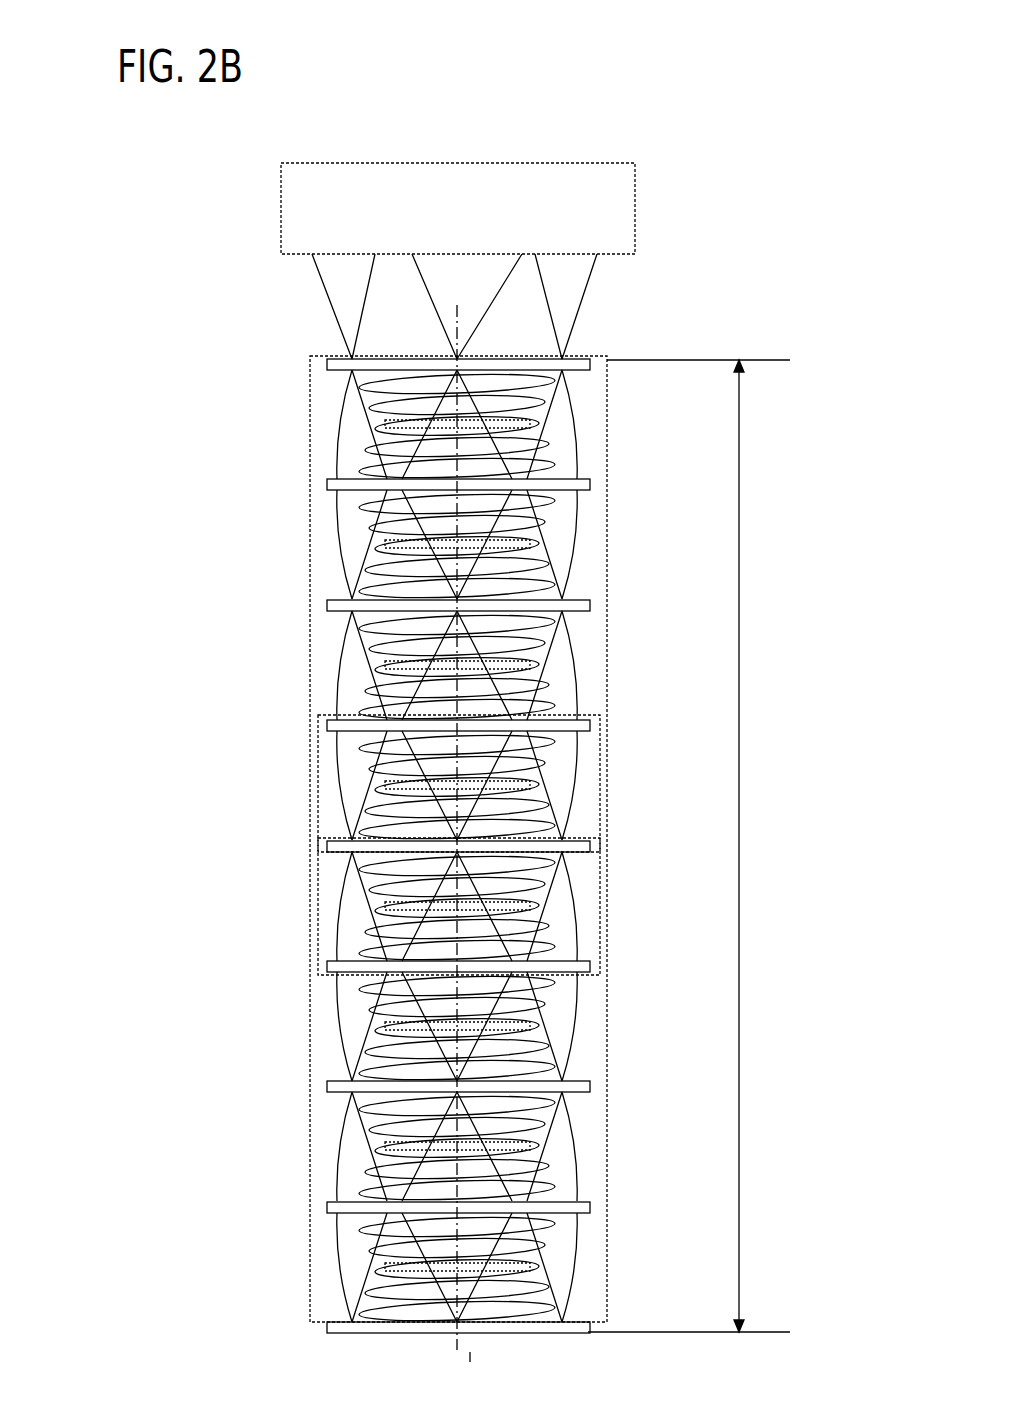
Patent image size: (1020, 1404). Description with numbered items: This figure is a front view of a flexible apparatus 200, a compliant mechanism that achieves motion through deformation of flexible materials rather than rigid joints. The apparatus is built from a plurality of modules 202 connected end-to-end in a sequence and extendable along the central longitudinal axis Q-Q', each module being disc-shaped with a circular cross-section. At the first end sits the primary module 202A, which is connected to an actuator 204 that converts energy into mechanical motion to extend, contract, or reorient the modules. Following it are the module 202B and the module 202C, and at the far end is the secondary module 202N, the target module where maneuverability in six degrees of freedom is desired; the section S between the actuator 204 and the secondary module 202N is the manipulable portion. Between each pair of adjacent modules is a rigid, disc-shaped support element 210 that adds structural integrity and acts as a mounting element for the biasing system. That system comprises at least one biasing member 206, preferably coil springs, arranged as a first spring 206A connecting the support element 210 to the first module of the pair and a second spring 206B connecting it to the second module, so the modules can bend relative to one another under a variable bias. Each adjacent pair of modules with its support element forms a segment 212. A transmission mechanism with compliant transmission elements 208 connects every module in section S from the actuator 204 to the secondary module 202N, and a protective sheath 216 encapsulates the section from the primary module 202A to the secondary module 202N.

The flexible apparatus 200 is at (708, 74).
The actuator 204 is at (480, 222).
The biasing member 206 is at (320, 837).
The first spring 206A is at (372, 397).
The second spring 206B is at (372, 459).
The sheath 216 is at (308, 600).
The transmission elements 208 is at (580, 685).
The support element 210 is at (385, 903).
The segment 212 is at (318, 768).
The modules 202 is at (590, 950).
The primary module 202A is at (590, 360).
The module 202B is at (590, 485).
The module 202C is at (588, 601).
The secondary module 202N is at (590, 1330).